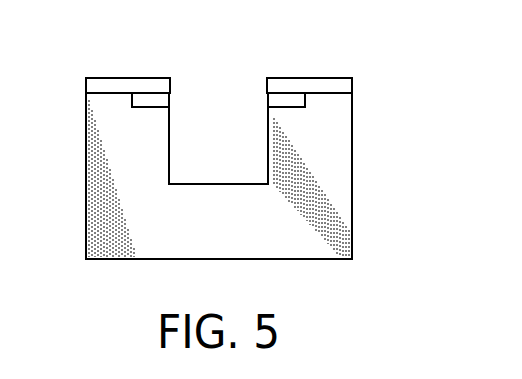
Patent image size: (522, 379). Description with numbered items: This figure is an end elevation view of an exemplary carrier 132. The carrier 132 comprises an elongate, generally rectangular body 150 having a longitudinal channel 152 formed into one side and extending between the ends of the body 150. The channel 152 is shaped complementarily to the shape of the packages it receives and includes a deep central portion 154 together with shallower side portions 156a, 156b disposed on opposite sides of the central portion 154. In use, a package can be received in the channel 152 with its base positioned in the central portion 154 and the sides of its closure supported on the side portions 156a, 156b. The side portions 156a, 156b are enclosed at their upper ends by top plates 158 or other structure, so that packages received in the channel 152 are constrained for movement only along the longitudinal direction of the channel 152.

The carrier 132 is at (93, 35).
The body 150 is at (345, 153).
The longitudinal channel 152 is at (218, 142).
The central portion 154 is at (217, 184).
The side portion 156a is at (287, 98).
The side portion 156b is at (155, 98).
The top plate 158 is at (100, 78).